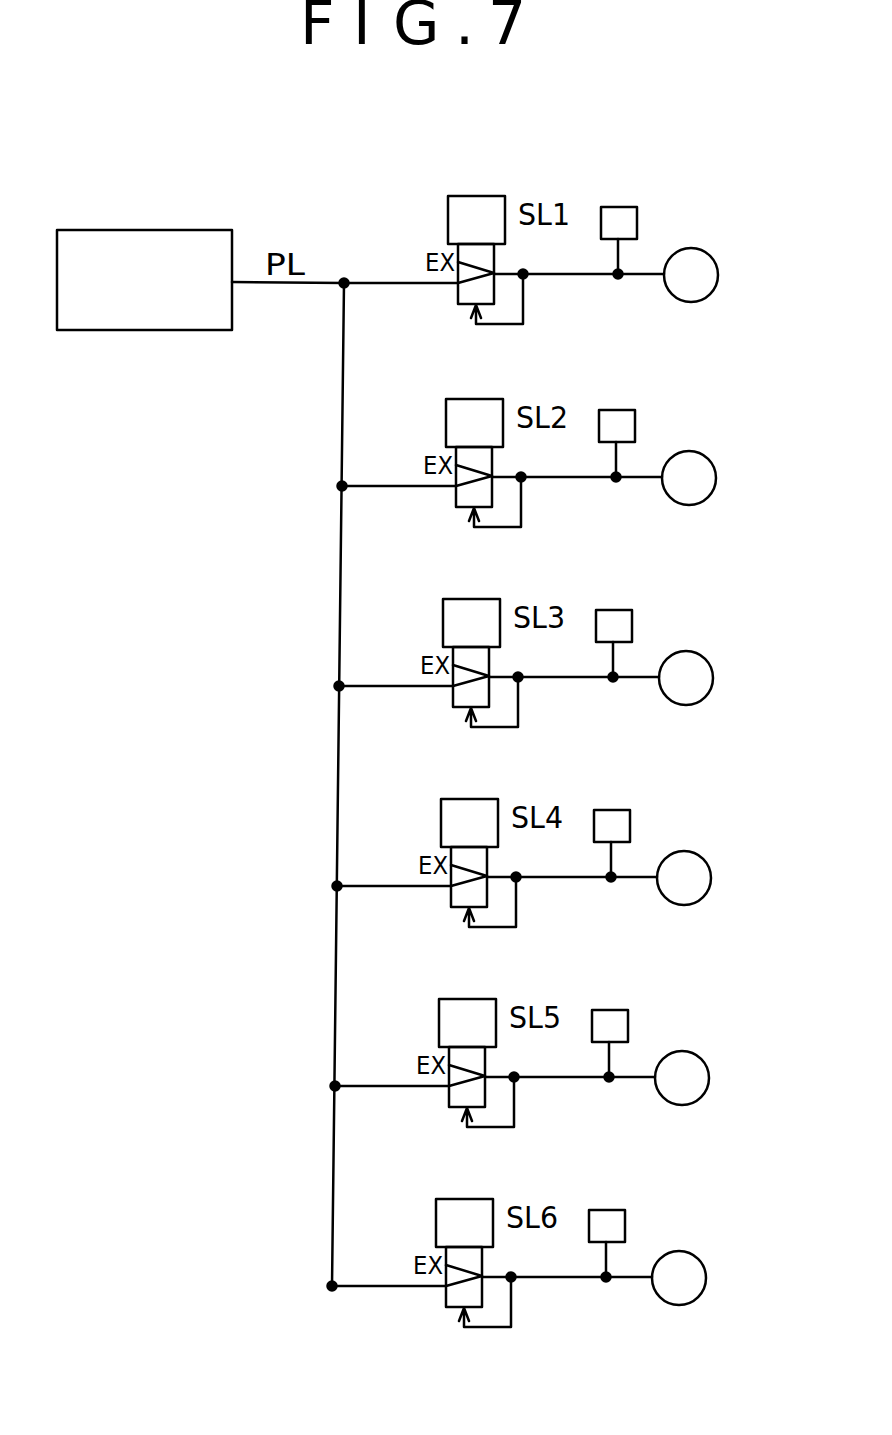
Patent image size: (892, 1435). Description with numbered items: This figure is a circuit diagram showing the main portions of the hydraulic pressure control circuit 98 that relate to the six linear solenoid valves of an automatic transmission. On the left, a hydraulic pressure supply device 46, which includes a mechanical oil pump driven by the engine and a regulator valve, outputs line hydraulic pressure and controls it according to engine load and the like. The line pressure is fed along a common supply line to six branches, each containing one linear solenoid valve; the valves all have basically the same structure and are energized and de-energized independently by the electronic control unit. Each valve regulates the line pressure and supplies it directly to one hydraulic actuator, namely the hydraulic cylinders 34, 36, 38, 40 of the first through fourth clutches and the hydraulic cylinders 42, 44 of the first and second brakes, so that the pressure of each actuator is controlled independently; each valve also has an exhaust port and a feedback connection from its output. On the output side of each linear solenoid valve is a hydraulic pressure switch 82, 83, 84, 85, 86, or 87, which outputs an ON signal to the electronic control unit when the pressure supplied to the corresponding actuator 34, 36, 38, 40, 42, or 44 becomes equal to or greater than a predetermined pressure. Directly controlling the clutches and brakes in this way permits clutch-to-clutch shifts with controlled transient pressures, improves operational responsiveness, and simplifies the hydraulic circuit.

The hydraulic pressure supply device 46 is at (103, 230).
The hydraulic pressure control circuit 98 is at (720, 181).
The hydraulic pressure switch 82 is at (623, 223).
The hydraulic pressure switch 83 is at (634, 418).
The hydraulic pressure switch 84 is at (631, 618).
The hydraulic pressure switch 85 is at (629, 818).
The hydraulic pressure switch 86 is at (627, 1018).
The hydraulic pressure switch 87 is at (624, 1218).
The hydraulic actuator 34 is at (704, 256).
The hydraulic actuator 36 is at (728, 463).
The hydraulic actuator 38 is at (725, 663).
The hydraulic actuator 40 is at (723, 863).
The hydraulic actuator 42 is at (721, 1063).
The hydraulic actuator 44 is at (718, 1263).